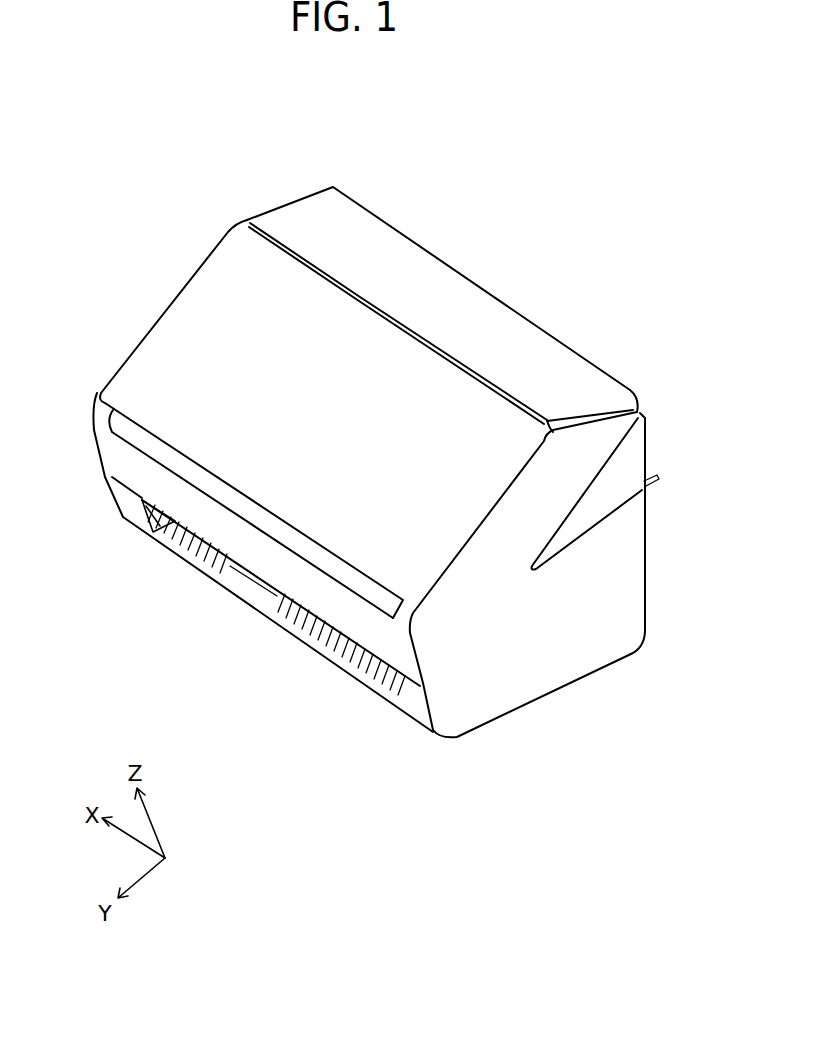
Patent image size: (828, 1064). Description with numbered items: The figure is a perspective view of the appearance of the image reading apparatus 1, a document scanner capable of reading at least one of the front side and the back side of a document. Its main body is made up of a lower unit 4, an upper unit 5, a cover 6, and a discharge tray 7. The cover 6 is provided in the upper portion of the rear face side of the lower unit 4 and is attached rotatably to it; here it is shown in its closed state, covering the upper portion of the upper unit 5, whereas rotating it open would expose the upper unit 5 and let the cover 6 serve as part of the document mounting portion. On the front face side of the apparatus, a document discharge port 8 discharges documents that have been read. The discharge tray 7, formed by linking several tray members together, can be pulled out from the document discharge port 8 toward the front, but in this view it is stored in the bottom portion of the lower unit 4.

The image reading apparatus 1 is at (547, 250).
The lower unit 4 is at (623, 590).
The upper unit 5 is at (550, 513).
The cover 6 is at (213, 250).
The discharge tray 7 is at (182, 550).
The document discharge port 8 is at (156, 526).